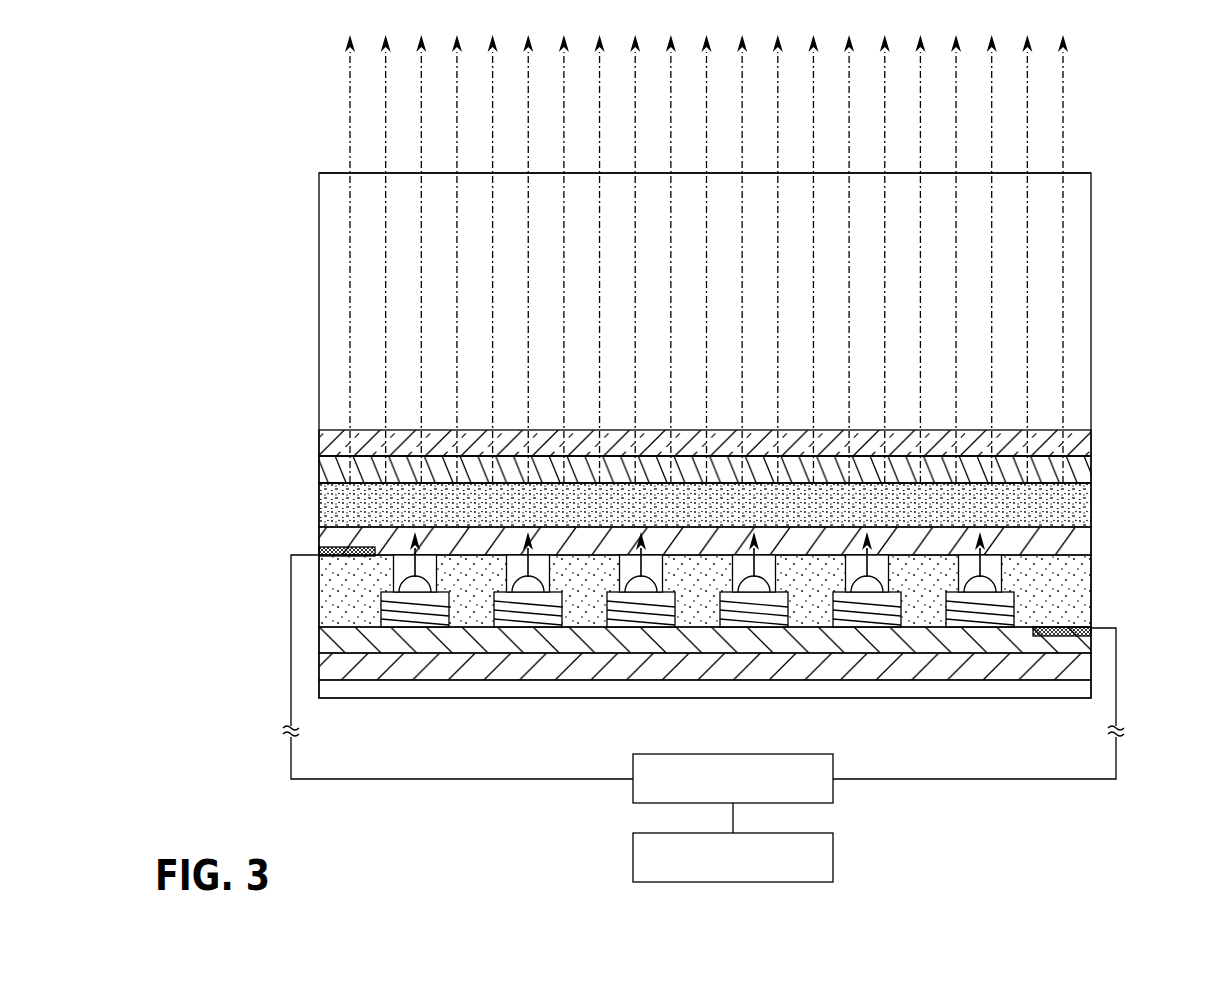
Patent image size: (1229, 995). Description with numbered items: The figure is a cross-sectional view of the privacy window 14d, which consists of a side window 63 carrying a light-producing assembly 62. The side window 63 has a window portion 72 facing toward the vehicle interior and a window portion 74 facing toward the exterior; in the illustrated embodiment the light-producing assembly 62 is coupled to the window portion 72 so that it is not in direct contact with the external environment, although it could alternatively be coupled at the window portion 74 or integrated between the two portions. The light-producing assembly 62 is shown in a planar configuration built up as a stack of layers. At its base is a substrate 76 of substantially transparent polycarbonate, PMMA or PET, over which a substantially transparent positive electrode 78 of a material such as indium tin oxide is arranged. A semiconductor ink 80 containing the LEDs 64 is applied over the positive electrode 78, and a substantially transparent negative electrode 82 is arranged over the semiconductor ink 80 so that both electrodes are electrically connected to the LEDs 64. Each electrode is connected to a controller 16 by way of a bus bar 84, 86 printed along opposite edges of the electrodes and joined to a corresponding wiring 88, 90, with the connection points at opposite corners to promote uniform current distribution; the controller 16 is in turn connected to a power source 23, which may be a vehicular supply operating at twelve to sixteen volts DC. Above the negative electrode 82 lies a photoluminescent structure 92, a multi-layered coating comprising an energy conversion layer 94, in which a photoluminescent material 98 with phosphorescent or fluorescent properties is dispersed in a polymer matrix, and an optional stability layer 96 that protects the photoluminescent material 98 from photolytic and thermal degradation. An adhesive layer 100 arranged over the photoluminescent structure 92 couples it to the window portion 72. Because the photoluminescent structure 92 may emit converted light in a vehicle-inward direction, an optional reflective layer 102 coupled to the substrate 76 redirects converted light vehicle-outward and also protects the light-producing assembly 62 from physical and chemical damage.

The privacy window 14d is at (1093, 114).
The window portion 74 is at (1073, 173).
The side window 63 is at (1092, 307).
The window portion 72 is at (1053, 427).
The adhesive layer 100 is at (1093, 442).
The stability layer 96 is at (318, 468).
The energy conversion layer 94 is at (318, 492).
The photoluminescent material 98 is at (318, 510).
The photoluminescent structure 92 is at (703, 492).
The negative electrode 82 is at (1093, 545).
The bus bar 86 is at (318, 549).
The semiconductor ink 80 is at (1068, 590).
The LEDs 64 is at (415, 608).
The bus bar 84 is at (1080, 622).
The positive electrode 78 is at (1093, 640).
The substrate 76 is at (1093, 667).
The reflective layer 102 is at (1075, 693).
The light-producing assembly 62 is at (700, 555).
The wiring 90 is at (290, 707).
The wiring 88 is at (1117, 705).
The controller 16 is at (833, 800).
The power source 23 is at (833, 850).